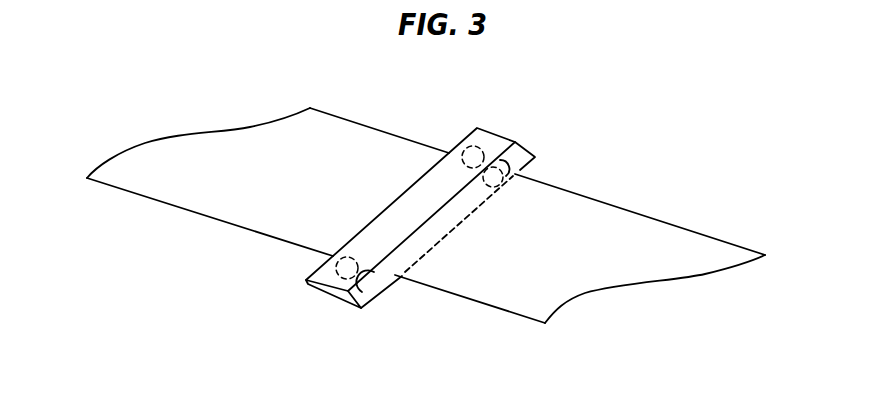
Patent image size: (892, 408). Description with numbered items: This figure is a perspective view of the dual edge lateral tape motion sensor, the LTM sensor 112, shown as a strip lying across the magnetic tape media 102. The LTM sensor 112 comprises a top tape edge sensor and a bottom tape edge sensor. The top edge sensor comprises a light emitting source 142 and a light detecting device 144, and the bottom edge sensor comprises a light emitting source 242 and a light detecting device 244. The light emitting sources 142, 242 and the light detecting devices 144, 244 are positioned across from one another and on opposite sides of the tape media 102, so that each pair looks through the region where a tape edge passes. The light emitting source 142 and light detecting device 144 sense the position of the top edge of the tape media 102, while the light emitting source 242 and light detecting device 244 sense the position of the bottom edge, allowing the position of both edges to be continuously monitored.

The magnetic tape media 102 is at (647, 236).
The LTM sensor 112 is at (408, 216).
The light emitting source 142 is at (473, 146).
The light detecting device 144 is at (503, 167).
The light emitting source 242 is at (336, 268).
The light detecting device 244 is at (380, 277).